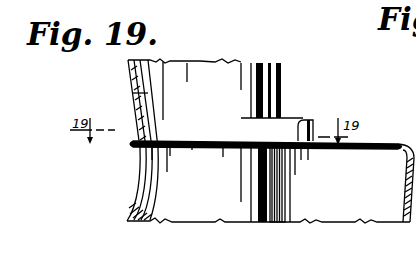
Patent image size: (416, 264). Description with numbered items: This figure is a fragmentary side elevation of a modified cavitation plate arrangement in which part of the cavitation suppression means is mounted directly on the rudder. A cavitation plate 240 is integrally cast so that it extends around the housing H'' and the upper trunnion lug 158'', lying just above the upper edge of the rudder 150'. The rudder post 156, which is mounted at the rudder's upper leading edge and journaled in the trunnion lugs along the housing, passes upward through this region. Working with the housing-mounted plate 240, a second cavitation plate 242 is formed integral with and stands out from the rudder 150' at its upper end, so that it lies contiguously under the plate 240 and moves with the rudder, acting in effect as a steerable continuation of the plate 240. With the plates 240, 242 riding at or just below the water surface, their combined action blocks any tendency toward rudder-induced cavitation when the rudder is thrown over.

The cavitation plate 240 is at (152, 147).
The housing H'' is at (120, 92).
The rudder post 156 is at (282, 88).
The upper trunnion lug 158'' is at (323, 127).
The second cavitation plate 242 is at (347, 147).
The rudder 150' is at (270, 198).